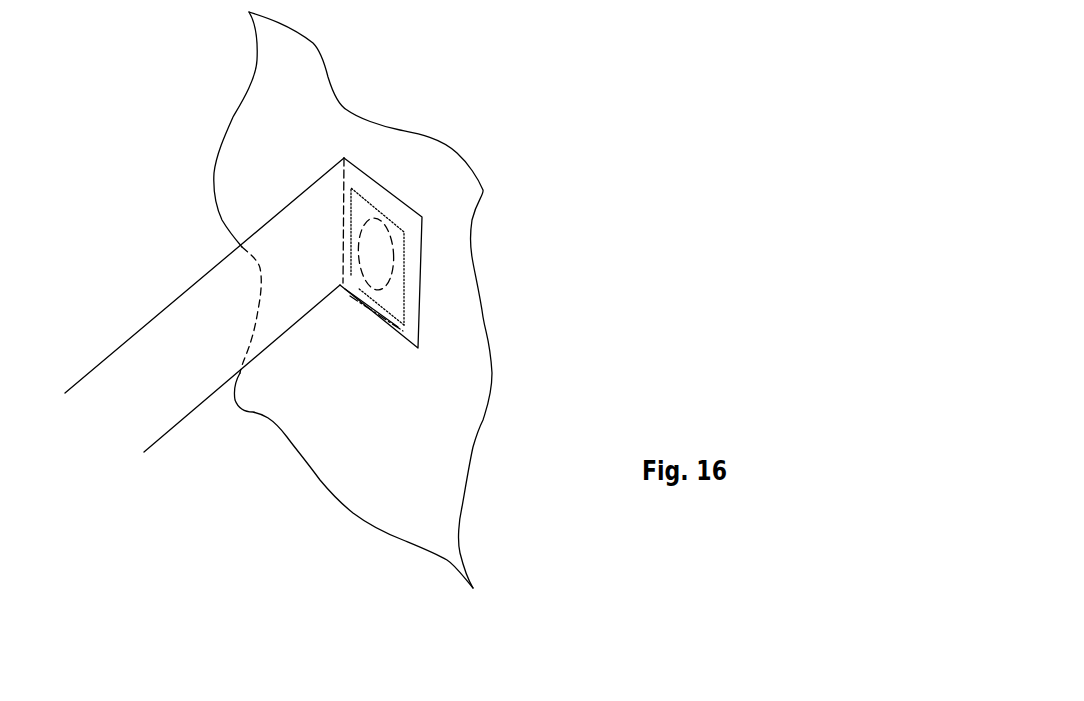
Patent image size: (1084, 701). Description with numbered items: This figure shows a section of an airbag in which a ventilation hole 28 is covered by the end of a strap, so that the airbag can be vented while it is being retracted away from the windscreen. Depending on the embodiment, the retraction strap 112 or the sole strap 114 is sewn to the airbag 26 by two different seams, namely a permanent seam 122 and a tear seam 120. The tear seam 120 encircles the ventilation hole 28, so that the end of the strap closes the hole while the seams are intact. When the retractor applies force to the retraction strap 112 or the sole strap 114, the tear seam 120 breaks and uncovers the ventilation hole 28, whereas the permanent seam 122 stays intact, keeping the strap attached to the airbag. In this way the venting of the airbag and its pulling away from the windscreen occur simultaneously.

The wall 26 is at (460, 378).
The ventilation hole 28 is at (370, 237).
The retraction strap 112 is at (183, 305).
The sole strap 114 is at (160, 337).
The tear seam 120 is at (403, 258).
The permanent seam 122 is at (380, 313).